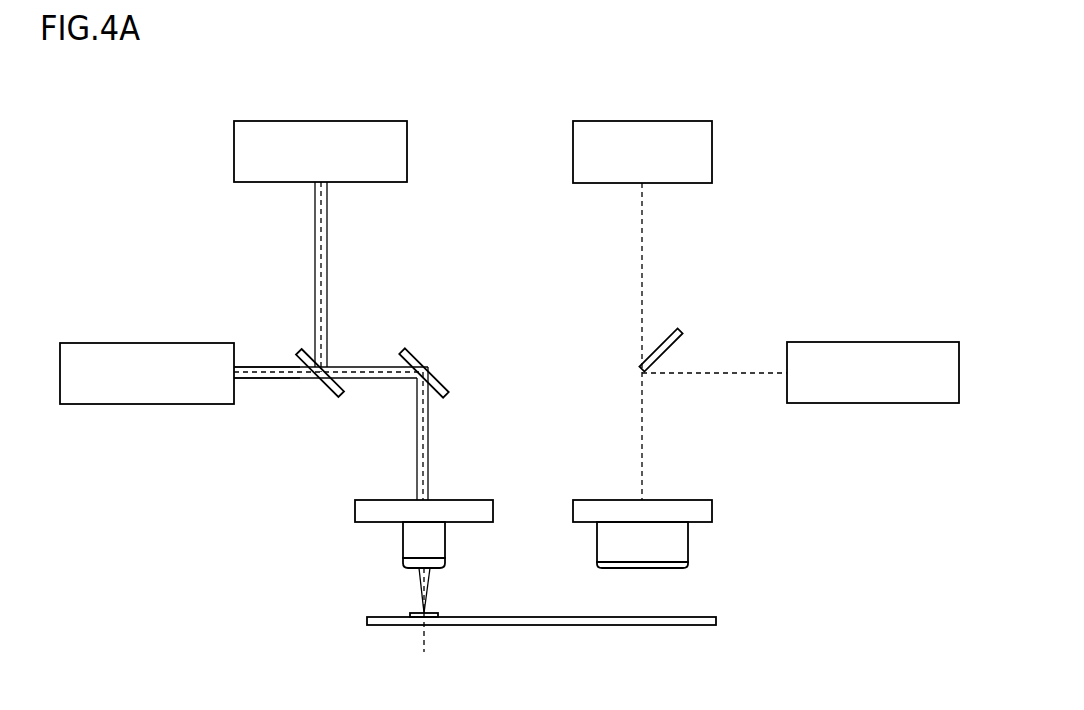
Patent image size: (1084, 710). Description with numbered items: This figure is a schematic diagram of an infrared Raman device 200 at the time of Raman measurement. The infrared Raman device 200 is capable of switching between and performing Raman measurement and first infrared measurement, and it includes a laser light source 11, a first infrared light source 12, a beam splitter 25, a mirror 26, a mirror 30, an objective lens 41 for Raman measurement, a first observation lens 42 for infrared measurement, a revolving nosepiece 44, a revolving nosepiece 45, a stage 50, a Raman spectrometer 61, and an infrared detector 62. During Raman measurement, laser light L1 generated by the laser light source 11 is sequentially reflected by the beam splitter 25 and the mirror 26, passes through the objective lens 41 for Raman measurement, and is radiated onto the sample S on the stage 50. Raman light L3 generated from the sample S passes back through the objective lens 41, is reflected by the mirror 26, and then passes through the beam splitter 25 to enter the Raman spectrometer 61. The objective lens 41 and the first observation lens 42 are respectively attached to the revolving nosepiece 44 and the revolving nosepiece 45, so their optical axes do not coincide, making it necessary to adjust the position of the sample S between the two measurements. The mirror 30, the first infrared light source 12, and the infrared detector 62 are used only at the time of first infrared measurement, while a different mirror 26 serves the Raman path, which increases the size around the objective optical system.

The infrared Raman device 200 is at (847, 101).
The laser light source 11 is at (353, 121).
The first infrared light source 12 is at (893, 341).
The Raman spectrometer 61 is at (214, 342).
The infrared detector 62 is at (602, 120).
The beam splitter 25 is at (300, 355).
The mirror 26 is at (412, 350).
The mirror 30 is at (677, 331).
The objective lens for Raman measurement 41 is at (408, 545).
The first observation lens for infrared measurement 42 is at (680, 545).
The revolving nosepiece 44 is at (372, 510).
The revolving nosepiece 45 is at (692, 510).
The stage 50 is at (710, 618).
The laser light L1 is at (328, 255).
The Raman light L3 is at (292, 380).
The sample S is at (424, 645).